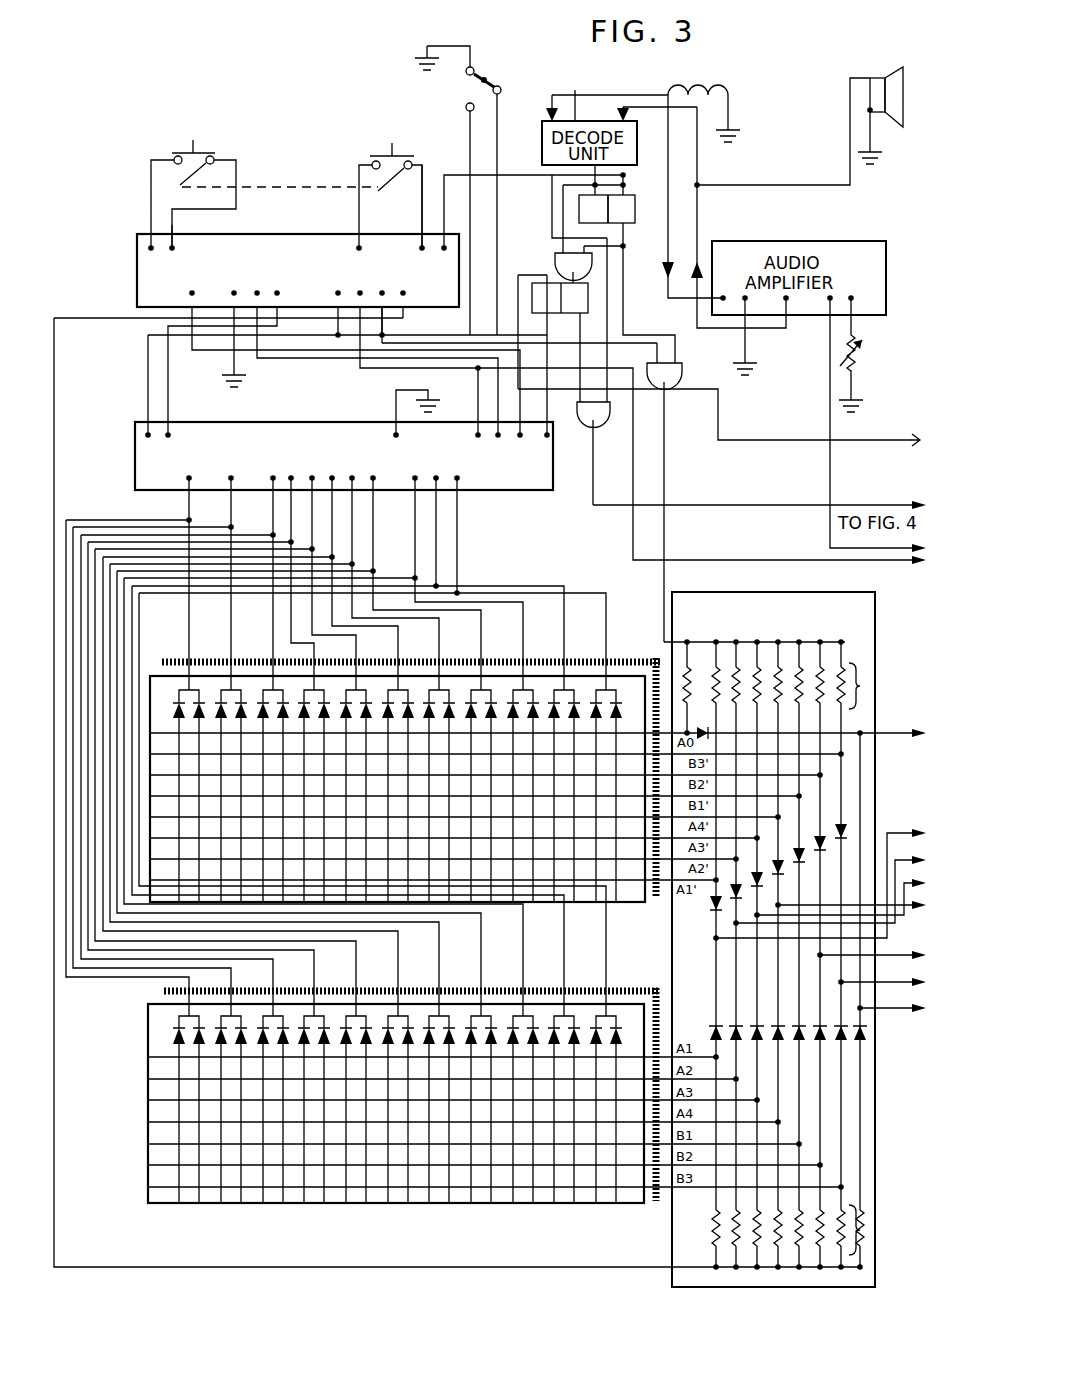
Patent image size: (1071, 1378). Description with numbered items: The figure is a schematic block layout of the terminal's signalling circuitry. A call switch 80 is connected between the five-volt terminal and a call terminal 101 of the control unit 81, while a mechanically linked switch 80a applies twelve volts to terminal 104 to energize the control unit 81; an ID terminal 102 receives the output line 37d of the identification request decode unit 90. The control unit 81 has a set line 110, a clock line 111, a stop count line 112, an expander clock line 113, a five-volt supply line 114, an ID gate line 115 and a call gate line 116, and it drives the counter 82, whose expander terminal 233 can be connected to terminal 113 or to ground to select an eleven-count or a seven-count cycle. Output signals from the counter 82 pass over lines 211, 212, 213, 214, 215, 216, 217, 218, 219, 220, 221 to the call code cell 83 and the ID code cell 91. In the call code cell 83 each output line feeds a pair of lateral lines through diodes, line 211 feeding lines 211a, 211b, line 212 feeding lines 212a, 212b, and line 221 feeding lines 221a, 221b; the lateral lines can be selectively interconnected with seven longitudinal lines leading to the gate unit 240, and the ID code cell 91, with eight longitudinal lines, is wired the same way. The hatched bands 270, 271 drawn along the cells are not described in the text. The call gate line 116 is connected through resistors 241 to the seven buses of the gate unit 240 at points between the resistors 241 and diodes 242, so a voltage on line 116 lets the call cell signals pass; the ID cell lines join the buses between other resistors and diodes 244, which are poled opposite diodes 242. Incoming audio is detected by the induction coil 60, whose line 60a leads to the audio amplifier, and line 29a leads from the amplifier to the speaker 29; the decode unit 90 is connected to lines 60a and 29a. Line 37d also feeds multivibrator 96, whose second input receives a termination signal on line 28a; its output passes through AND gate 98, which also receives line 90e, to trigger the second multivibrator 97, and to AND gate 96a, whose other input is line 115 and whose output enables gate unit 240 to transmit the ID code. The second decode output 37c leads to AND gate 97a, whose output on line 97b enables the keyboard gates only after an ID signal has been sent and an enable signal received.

The control unit 81 is at (135, 284).
The switch 80a is at (186, 155).
The call switch 80 is at (405, 161).
The terminal 104 is at (175, 252).
The call terminal 101 is at (420, 252).
The ID terminal 102 is at (443, 257).
The output line 37d is at (453, 172).
The ID gate line 115 is at (458, 336).
The call gate line 116 is at (100, 319).
The set line 110 is at (218, 354).
The clock line 111 is at (311, 362).
The 5 volt supply line 114 is at (364, 371).
The expander clock line 113 is at (146, 390).
The stop count line 112 is at (164, 404).
The expander terminal 233 is at (541, 448).
The counter 82 is at (133, 461).
The counter output line 221 is at (187, 520).
The counter output line 220 is at (231, 527).
The counter output line 219 is at (273, 536).
The counter output line 218 is at (290, 480).
The counter output line 217 is at (313, 480).
The counter output line 216 is at (335, 557).
The counter output line 215 is at (353, 562).
The counter output line 214 is at (374, 540).
The counter output line 213 is at (418, 578).
The counter output line 212 is at (438, 575).
The counter output line 211 is at (460, 513).
The shielding band 271 is at (190, 656).
The ID code cell 91 is at (398, 839).
The shielding band 270 is at (164, 991).
The call code cell 83 is at (404, 1169).
The lateral line 221b is at (177, 1206).
The lateral line 221a is at (199, 1206).
The lateral line 212b is at (552, 1206).
The lateral line 212a is at (574, 1206).
The lateral line 211a is at (615, 1206).
The lateral line 211b is at (596, 1206).
The gate unit 240 is at (762, 592).
The diodes 244 is at (834, 826).
The diodes 242 is at (834, 1047).
The resistors 241 is at (866, 1237).
The identification request decode unit 90 is at (572, 93).
The induction coil 60 is at (692, 90).
The line 29a is at (800, 185).
The speaker 29 is at (887, 73).
The line 60a is at (665, 158).
The second output 37c is at (549, 192).
The line 90e is at (578, 211).
The multivibrator 96 is at (628, 222).
The AND gate 98 is at (556, 262).
The second multivibrator 97 is at (588, 297).
The AND gate 96a is at (681, 370).
The AND gate 97a is at (603, 371).
The line 97b is at (701, 507).
The line 28a is at (735, 434).